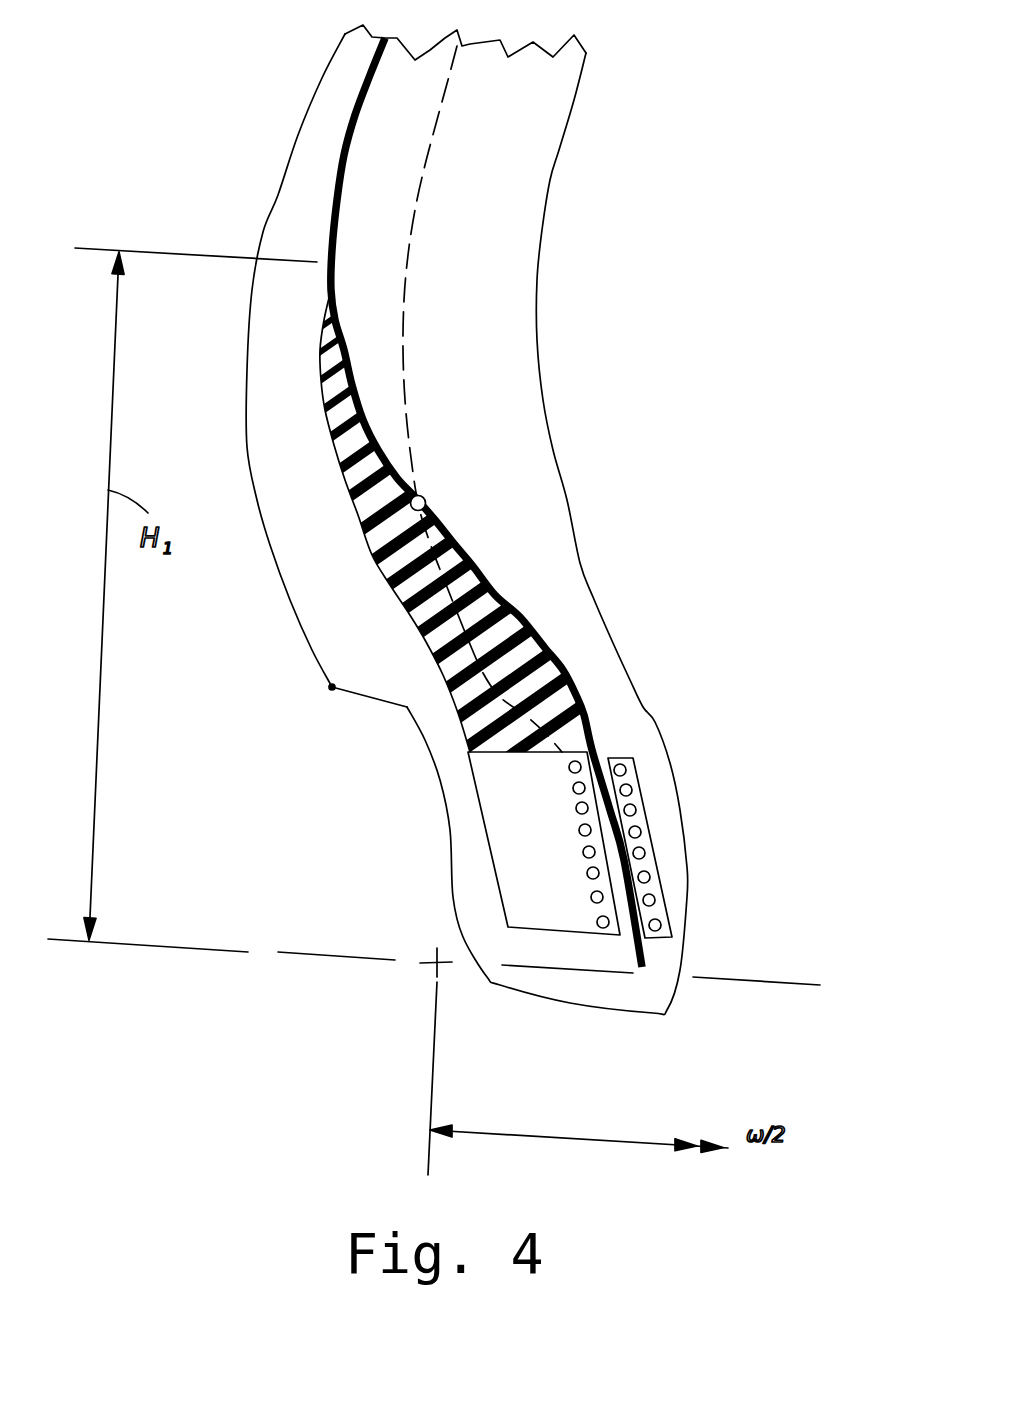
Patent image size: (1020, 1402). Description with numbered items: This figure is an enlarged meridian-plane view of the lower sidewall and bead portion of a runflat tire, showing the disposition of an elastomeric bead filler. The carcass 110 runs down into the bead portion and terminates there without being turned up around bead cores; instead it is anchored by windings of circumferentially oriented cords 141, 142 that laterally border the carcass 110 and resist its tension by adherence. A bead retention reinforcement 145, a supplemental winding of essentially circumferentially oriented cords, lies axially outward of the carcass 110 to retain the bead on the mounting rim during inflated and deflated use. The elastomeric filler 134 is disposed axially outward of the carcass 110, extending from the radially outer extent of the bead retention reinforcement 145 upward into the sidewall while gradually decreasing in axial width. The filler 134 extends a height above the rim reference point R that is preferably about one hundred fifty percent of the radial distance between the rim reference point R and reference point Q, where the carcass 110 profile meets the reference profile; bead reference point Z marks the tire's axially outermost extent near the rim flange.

The carcass 110 is at (510, 603).
The elastomeric filler 134 is at (363, 528).
The circumferentially oriented cord winding 141 is at (636, 806).
The circumferentially oriented cord winding 142 is at (583, 873).
The bead retention reinforcement 145 is at (478, 812).
The reference point Q is at (426, 498).
The bead reference point Z is at (332, 687).
The rim reference point R is at (433, 963).